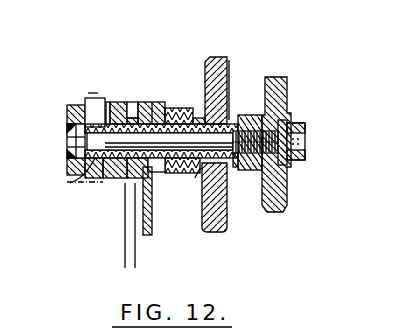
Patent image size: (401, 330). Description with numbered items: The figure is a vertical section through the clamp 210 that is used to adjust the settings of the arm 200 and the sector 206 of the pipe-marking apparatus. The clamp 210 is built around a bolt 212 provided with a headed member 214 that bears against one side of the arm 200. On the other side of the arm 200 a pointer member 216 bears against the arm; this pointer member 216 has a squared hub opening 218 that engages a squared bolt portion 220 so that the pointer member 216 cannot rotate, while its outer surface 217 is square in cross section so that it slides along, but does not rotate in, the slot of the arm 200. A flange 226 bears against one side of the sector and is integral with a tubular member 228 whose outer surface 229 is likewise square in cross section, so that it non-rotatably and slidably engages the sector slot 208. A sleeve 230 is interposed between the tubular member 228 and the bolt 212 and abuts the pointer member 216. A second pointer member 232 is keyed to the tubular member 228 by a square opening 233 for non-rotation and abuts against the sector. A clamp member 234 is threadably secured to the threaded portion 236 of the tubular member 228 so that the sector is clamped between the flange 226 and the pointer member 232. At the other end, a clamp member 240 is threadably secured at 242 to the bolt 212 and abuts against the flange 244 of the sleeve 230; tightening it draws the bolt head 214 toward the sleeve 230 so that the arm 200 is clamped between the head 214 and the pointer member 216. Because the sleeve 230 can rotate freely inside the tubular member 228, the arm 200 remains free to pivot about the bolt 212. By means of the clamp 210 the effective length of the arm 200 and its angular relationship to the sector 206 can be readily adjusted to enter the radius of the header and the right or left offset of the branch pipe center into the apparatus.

The arm 200 is at (93, 99).
The sector 206 is at (137, 118).
The sector slot 208 is at (140, 185).
The clamp 210 is at (312, 97).
The bolt 212 is at (217, 138).
The headed member 214 is at (72, 107).
The pointer member 216 is at (111, 100).
The outer surface 217 is at (80, 183).
The squared hub opening 218 is at (87, 137).
The squared bolt portion 220 is at (67, 157).
The flange 226 is at (128, 102).
The tubular member 228 is at (153, 118).
The outer surface 229 is at (146, 183).
The sleeve 230 is at (127, 180).
The pointer member 232 is at (142, 102).
The square opening 233 is at (167, 182).
The clamp member 234 is at (222, 68).
The threaded portion 236 is at (205, 100).
The clamp member 240 is at (280, 78).
The threaded connection 242 is at (248, 170).
The flange 244 is at (238, 122).